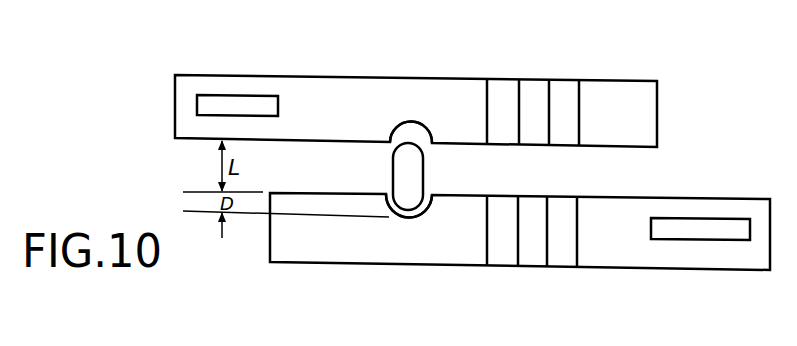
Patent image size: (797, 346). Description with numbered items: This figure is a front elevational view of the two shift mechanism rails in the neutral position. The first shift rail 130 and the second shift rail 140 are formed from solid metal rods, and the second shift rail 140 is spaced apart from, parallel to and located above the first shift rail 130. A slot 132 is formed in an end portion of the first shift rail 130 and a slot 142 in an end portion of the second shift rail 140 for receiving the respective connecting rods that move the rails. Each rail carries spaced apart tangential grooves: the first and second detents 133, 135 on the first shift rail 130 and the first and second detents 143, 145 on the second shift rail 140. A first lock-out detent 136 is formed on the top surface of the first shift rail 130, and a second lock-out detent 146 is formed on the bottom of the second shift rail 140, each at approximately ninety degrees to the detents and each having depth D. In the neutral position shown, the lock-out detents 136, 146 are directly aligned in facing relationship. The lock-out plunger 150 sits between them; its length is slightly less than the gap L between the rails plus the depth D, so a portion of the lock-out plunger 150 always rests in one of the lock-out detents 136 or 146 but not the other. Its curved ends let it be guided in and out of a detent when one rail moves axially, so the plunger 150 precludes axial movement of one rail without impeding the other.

The first shift rail 130 is at (292, 265).
The slot 132 is at (710, 228).
The first detent 133 is at (500, 252).
The second detent 135 is at (558, 255).
The first lock-out detent 136 is at (407, 218).
The second shift rail 140 is at (658, 80).
The slot 142 is at (228, 103).
The first detent 143 is at (503, 98).
The second detent 145 is at (566, 95).
The second lock-out detent 146 is at (410, 118).
The lock-out plunger 150 is at (403, 172).